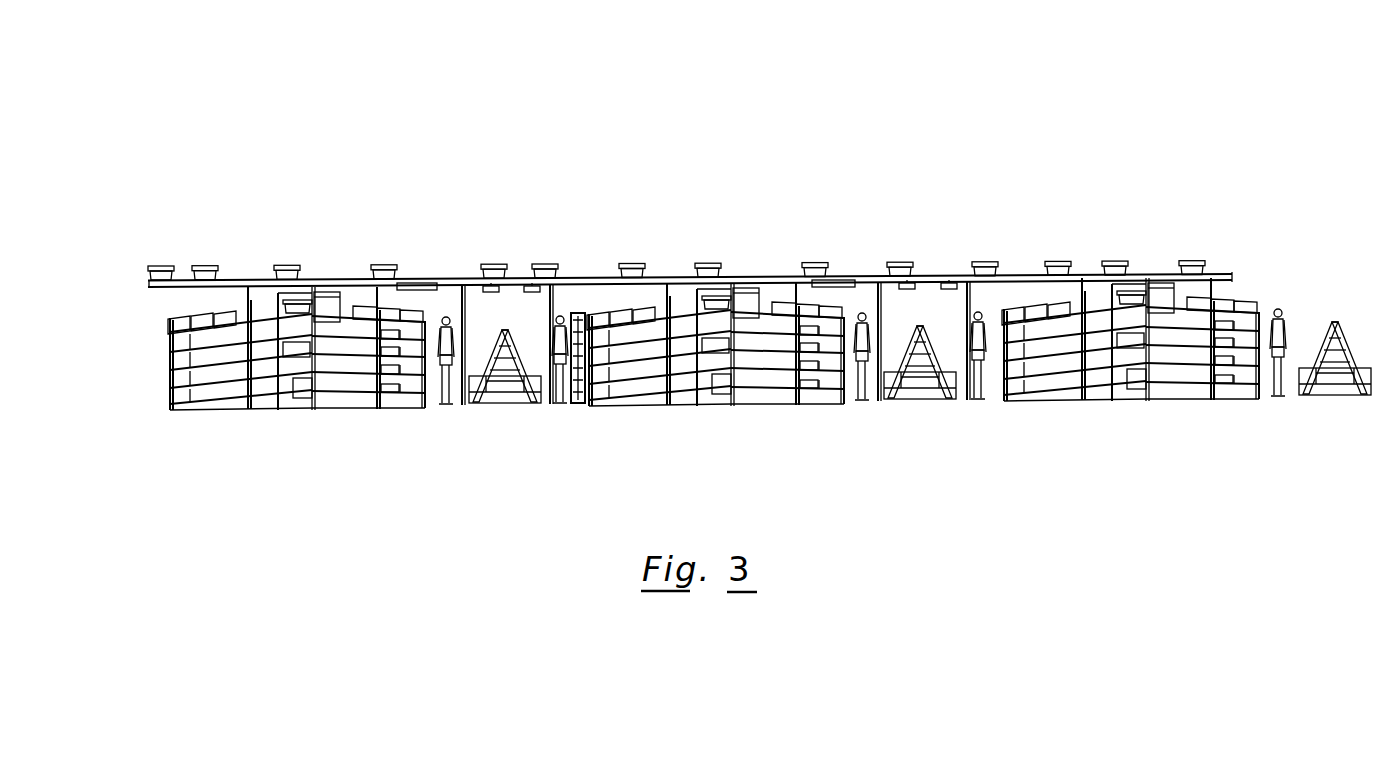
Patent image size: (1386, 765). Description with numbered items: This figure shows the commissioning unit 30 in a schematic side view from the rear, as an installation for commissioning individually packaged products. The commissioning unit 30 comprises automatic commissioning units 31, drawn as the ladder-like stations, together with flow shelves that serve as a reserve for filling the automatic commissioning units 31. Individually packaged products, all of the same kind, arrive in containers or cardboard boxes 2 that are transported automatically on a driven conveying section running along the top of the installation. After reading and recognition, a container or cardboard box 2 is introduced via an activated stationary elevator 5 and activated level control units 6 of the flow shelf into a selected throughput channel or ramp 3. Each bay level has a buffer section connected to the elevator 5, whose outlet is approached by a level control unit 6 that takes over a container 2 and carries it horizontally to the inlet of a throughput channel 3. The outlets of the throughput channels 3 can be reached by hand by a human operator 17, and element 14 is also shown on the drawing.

The commissioning unit 30 is at (580, 115).
The containers or cardboard boxes 2 is at (988, 274).
The throughput channels or ramps 3 is at (1246, 318).
The stationary elevator 5 is at (328, 297).
The level control units 6 is at (303, 315).
The transfer station 14 is at (420, 283).
The human operator 17 is at (982, 311).
The automatic commissioning units 31 is at (500, 334).